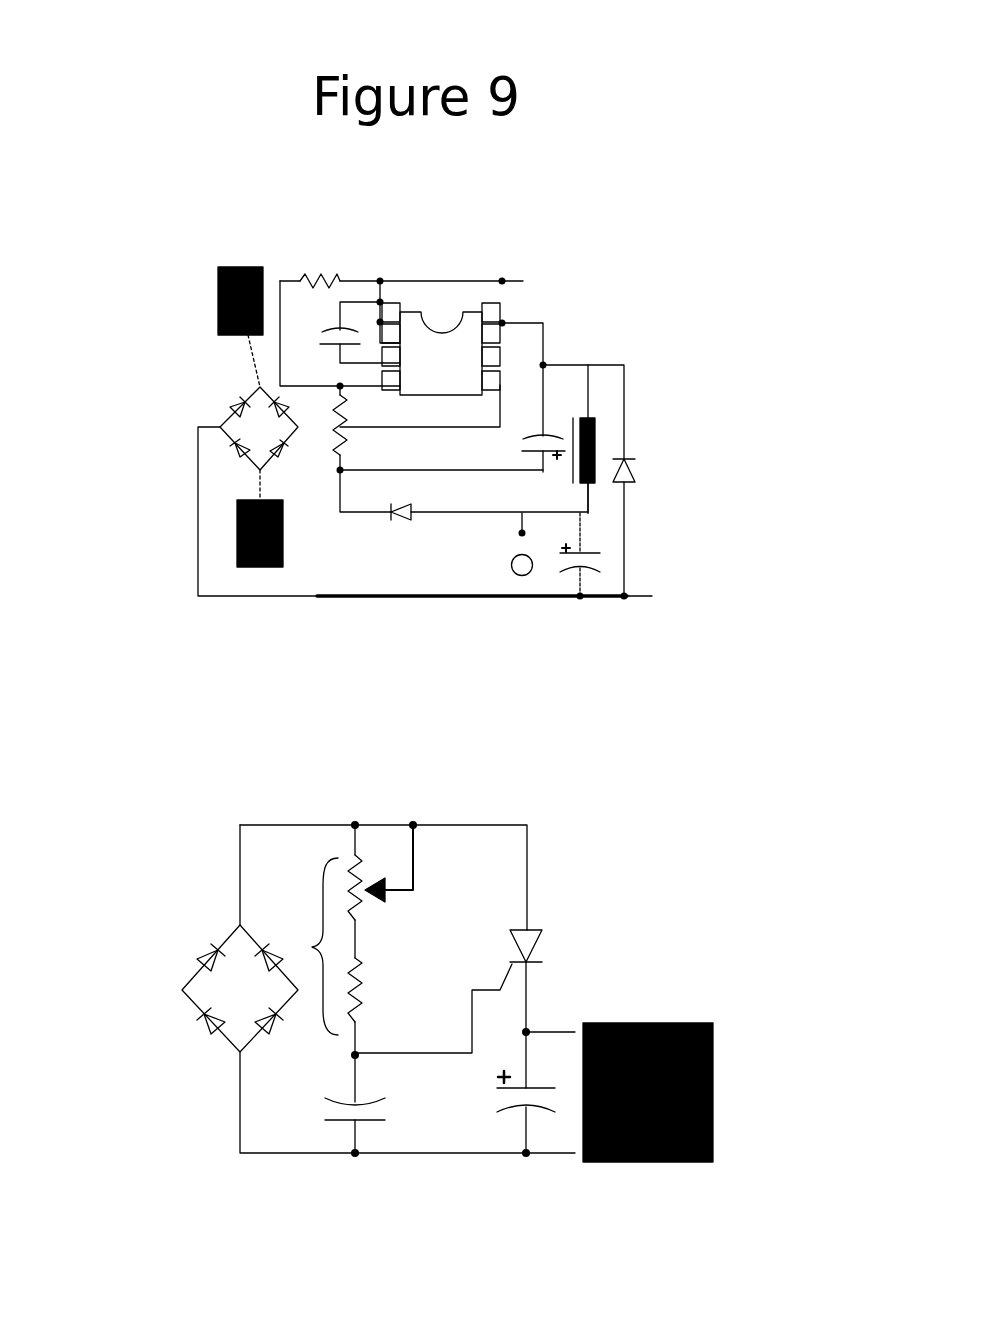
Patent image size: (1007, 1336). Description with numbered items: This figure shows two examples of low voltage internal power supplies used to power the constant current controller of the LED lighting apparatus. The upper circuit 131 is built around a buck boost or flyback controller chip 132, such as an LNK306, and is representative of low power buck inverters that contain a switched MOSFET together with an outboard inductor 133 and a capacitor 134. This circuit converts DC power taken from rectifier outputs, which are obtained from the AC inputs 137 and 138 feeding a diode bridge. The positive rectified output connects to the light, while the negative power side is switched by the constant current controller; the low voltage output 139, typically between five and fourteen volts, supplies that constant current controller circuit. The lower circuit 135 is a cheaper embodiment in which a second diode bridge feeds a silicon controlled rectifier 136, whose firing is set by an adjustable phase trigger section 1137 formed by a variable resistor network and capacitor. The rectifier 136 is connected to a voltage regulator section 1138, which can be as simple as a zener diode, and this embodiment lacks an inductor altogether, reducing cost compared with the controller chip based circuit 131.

The circuit 131 is at (150, 257).
The buck boost or flyback controller chip 132 is at (447, 318).
The outboard inductor 133 is at (603, 455).
The capacitor 134 is at (605, 565).
The circuit 135 is at (147, 813).
The silicon controlled rectifier 136 is at (558, 940).
The AC input 137 is at (207, 292).
The AC input 138 is at (260, 580).
The low voltage output 139 is at (505, 558).
The adjustable phase trigger section 1137 is at (320, 946).
The voltage regulator section 1138 is at (698, 1023).